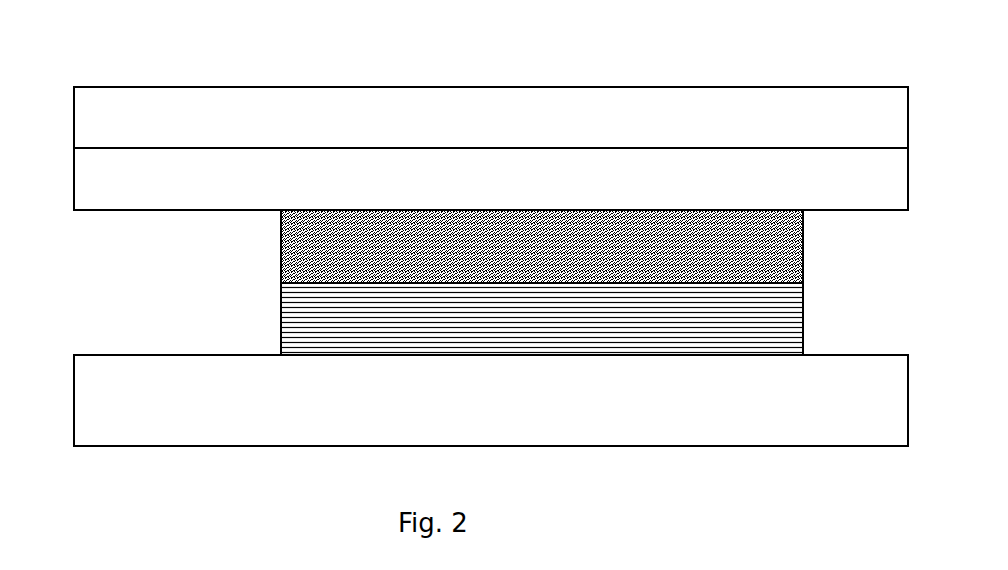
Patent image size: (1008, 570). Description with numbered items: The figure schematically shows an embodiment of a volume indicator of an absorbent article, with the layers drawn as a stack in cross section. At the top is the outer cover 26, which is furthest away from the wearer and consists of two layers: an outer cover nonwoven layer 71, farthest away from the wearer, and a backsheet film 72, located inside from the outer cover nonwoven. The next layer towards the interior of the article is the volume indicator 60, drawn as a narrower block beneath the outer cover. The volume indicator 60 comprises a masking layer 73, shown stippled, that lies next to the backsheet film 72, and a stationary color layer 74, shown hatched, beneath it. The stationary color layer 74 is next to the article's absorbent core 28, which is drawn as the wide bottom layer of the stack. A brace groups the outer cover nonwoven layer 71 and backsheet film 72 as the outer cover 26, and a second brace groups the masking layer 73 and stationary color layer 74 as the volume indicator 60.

The outer cover 26 is at (72, 87).
The outer cover nonwoven layer 71 is at (123, 98).
The backsheet film 72 is at (130, 198).
The volume indicator 60 is at (818, 218).
The masking layer 73 is at (290, 253).
The stationary color layer 74 is at (295, 311).
The absorbent core 28 is at (130, 430).